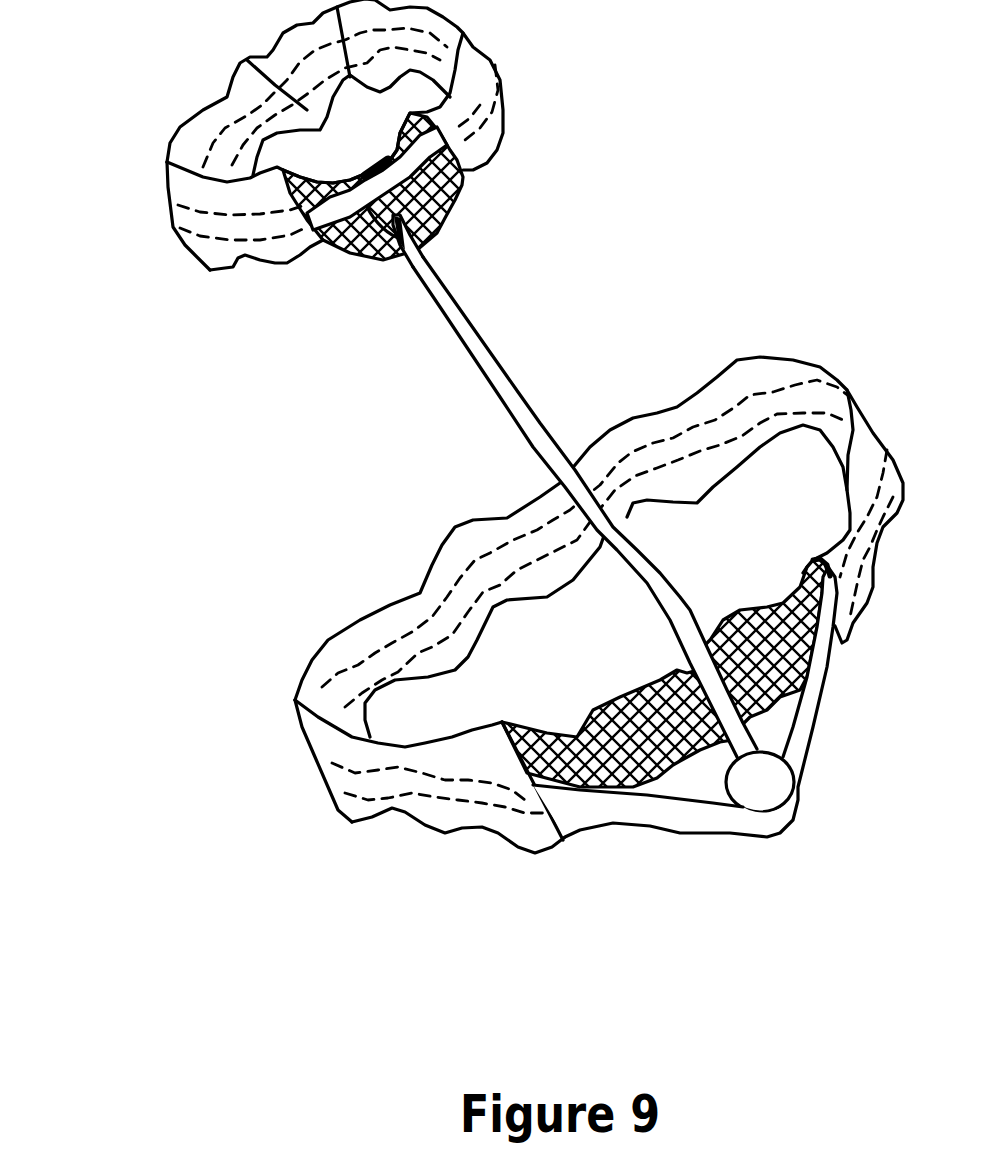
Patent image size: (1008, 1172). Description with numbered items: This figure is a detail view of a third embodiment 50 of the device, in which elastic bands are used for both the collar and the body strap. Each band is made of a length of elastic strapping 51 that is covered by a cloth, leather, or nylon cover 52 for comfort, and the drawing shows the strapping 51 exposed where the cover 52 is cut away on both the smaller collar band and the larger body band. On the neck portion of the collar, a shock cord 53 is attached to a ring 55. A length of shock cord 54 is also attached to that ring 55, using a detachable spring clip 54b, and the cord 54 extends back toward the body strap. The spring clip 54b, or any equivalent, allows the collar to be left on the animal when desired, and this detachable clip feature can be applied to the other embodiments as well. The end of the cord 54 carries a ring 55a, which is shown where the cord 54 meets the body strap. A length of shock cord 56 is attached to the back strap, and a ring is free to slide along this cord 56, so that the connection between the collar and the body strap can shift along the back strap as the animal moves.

The third embodiment 50 is at (303, 470).
The elastic strapping 51 is at (427, 223).
The cover 52 is at (160, 200).
The shock cord 53 is at (330, 233).
The shock cord 54 is at (500, 368).
The spring clip 54b is at (420, 255).
The ring 55 is at (380, 260).
The ring 55a is at (790, 817).
The shock cord 56 is at (656, 836).